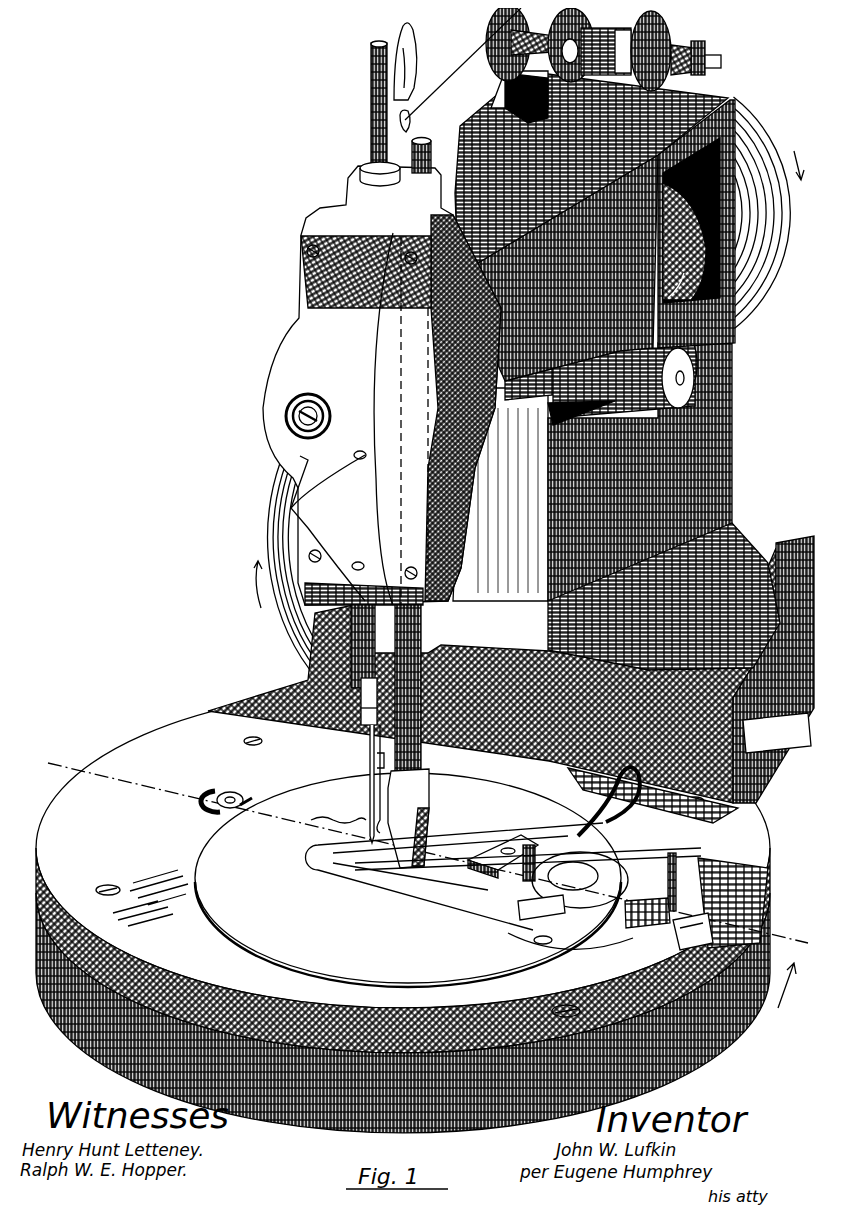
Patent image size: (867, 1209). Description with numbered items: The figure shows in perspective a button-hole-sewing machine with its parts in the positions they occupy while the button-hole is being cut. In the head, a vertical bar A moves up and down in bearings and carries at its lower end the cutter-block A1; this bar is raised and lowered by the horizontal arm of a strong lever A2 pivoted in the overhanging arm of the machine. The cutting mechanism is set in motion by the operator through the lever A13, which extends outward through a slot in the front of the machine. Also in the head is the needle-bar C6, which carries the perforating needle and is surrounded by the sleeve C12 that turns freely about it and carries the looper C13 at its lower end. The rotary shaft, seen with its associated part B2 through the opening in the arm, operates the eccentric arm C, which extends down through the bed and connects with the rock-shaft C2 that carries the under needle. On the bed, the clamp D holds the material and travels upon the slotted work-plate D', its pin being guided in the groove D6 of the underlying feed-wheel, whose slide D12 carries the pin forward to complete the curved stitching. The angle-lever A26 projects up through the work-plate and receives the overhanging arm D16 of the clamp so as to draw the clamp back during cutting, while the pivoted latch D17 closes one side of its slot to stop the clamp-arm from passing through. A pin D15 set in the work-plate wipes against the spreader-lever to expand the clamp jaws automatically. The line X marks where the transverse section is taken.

The vertical bar A is at (405, 746).
The cutter-block A1 is at (410, 806).
The lever A2 is at (505, 437).
The lever A13 is at (777, 733).
The angle-lever A26 is at (690, 926).
The shaft B2 is at (684, 241).
The eccentric arm C is at (672, 295).
The rock-shaft C2 is at (360, 790).
The needle-bar C6 is at (357, 735).
The sleeve C12 is at (352, 700).
The looper C13 is at (366, 757).
The clamp D is at (481, 877).
The work-plate D' is at (403, 910).
The groove D6 is at (226, 793).
The slide D12 is at (605, 842).
The pin D15 is at (690, 862).
The overhanging arm D16 is at (647, 913).
The pivoted latch D17 is at (664, 845).
The section line X is at (419, 855).